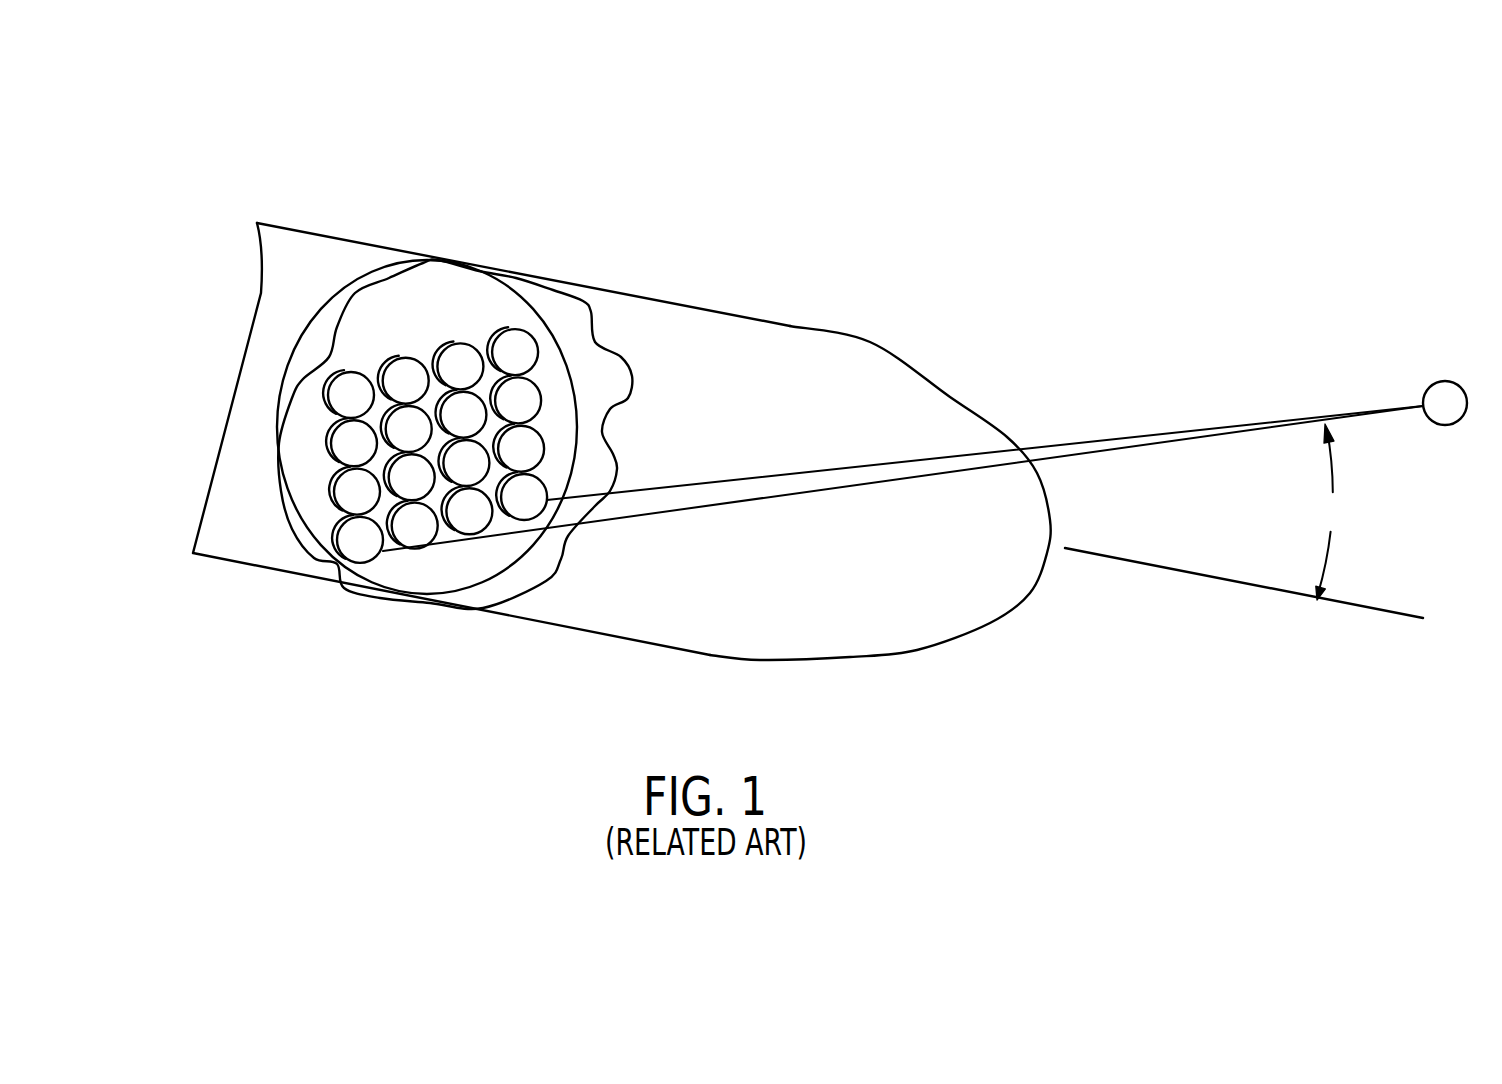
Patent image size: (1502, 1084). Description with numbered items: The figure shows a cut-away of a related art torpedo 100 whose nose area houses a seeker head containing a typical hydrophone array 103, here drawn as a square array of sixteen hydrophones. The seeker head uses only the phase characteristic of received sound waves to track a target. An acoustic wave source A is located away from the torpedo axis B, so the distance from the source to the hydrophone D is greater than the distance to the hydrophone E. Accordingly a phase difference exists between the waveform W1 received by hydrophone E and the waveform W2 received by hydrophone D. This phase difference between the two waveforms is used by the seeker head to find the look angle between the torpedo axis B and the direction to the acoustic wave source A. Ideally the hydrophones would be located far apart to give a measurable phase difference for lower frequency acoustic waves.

The torpedo 100 is at (857, 349).
The hydrophone array 103 is at (498, 633).
The hydrophone D is at (357, 539).
The hydrophone E is at (521, 496).
The waveform W1 is at (713, 485).
The waveform W2 is at (713, 510).
The acoustic wave source A is at (1459, 403).
The torpedo axis B is at (1257, 591).